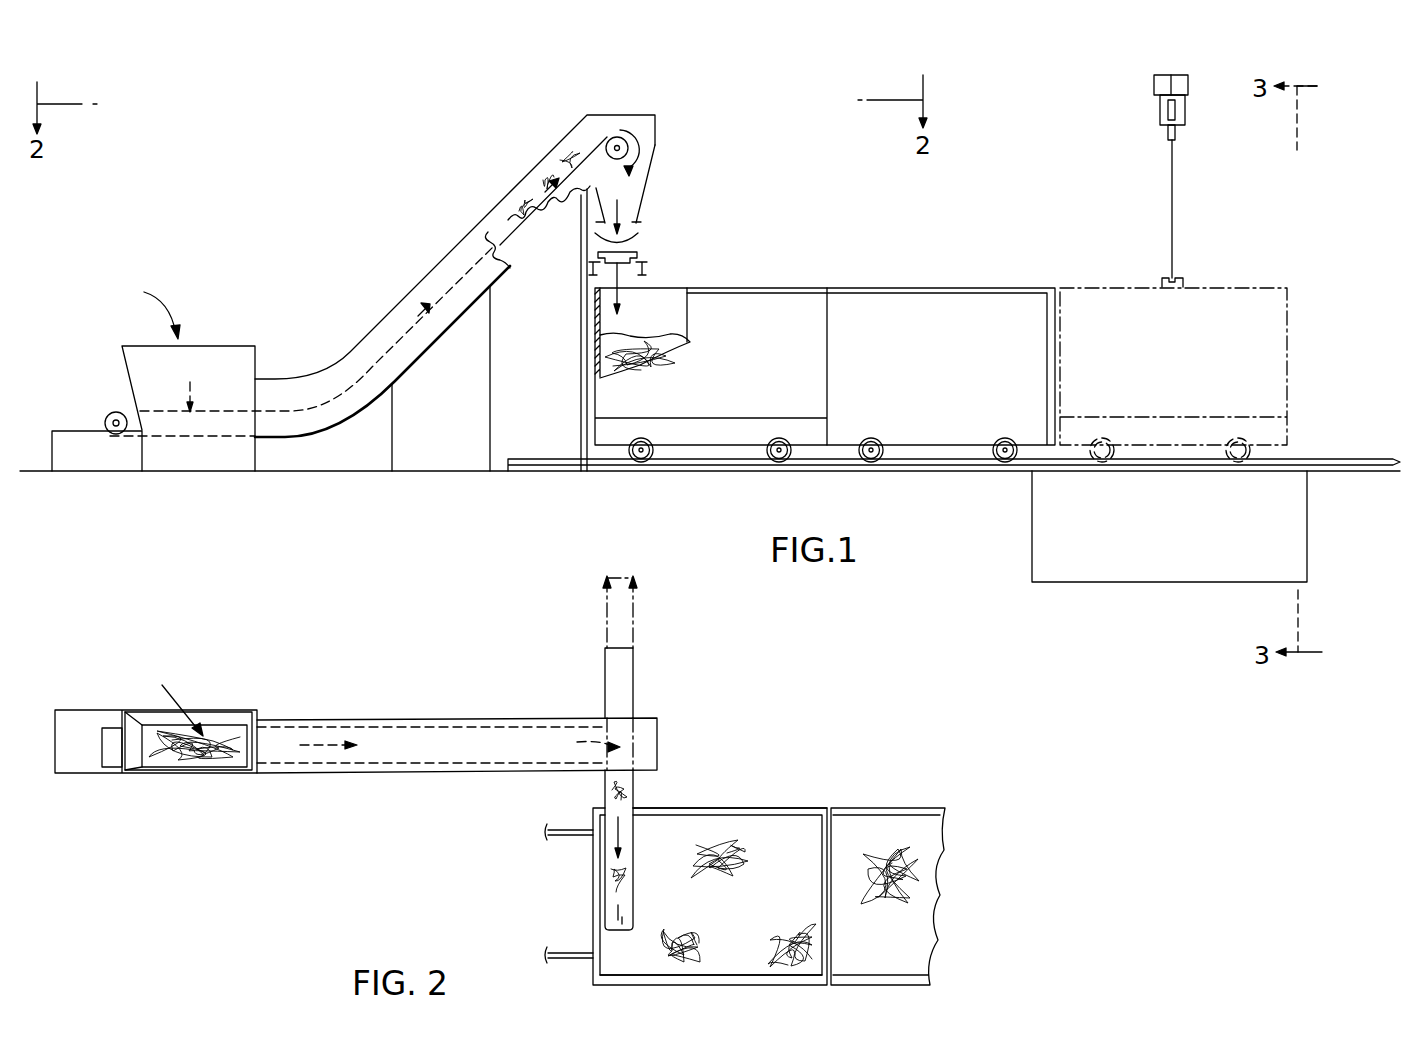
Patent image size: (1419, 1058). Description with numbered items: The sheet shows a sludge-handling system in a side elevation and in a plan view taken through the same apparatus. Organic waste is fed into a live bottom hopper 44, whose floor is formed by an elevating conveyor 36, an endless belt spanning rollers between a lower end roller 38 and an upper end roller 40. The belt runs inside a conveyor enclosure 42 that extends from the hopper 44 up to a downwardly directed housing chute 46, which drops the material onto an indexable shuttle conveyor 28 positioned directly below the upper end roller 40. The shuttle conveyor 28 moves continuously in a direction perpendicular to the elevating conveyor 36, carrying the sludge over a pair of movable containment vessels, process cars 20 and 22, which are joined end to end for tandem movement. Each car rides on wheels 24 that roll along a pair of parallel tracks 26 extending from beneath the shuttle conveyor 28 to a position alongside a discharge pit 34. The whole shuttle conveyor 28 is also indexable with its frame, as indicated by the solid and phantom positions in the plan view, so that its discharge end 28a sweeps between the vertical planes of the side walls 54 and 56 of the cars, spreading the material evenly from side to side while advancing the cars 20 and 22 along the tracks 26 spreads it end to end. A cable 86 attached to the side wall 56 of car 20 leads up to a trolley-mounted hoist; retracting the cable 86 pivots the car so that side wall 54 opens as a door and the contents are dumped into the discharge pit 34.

In FIG. 1, the process car 20 is at (735, 371).
In FIG. 2, the process car 20 is at (763, 808).
In FIG. 1, the process car 22 is at (922, 371).
In FIG. 2, the process car 22 is at (922, 808).
In FIG. 1, the wheels 24 is at (636, 462).
In FIG. 1, the tracks 26 is at (1347, 457).
In FIG. 2, the tracks 26 is at (558, 838).
In FIG. 1, the indexable shuttle conveyor 28 is at (638, 251).
In FIG. 2, the indexable shuttle conveyor 28 is at (632, 693).
In FIG. 2, the discharge end 28a is at (622, 938).
In FIG. 1, the discharge pit 34 is at (1157, 539).
In FIG. 1, the elevating conveyor 36 is at (500, 240).
In FIG. 2, the elevating conveyor 36 is at (477, 727).
In FIG. 1, the end roller 38 is at (113, 410).
In FIG. 2, the end roller 38 is at (112, 747).
In FIG. 1, the end roller 40 is at (617, 136).
In FIG. 1, the conveyor enclosure 42 is at (420, 277).
In FIG. 2, the conveyor enclosure 42 is at (398, 718).
In FIG. 1, the live bottom hopper 44 is at (240, 385).
In FIG. 2, the live bottom hopper 44 is at (210, 710).
In FIG. 1, the housing chute 46 is at (647, 184).
In FIG. 2, the side wall 54 is at (720, 808).
In FIG. 2, the side wall 56 is at (700, 985).
In FIG. 1, the cable 86 is at (1170, 186).